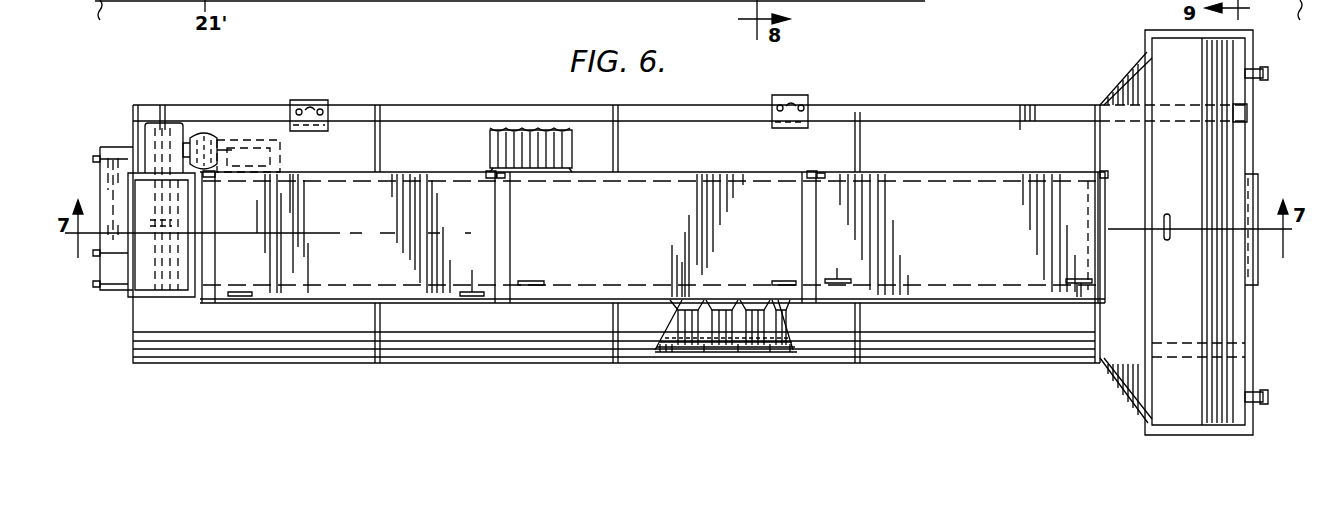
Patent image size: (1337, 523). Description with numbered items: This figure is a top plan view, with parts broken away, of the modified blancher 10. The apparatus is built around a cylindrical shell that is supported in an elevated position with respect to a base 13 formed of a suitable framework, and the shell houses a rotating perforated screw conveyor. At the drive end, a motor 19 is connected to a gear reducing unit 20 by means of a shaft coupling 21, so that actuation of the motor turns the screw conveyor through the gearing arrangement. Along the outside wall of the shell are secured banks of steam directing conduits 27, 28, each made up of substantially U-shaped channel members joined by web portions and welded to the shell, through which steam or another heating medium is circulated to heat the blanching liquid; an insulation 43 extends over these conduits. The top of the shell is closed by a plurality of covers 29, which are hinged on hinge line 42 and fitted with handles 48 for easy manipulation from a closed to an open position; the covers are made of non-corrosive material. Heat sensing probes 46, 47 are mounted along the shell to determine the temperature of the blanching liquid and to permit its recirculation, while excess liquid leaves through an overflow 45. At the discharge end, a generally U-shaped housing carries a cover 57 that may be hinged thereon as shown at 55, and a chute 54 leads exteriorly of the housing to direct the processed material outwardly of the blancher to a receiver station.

The blancher 10 is at (411, 124).
The base 13 is at (1068, 110).
The motor 19 is at (280, 157).
The gear reducing unit 20 is at (177, 137).
The shaft coupling 21 is at (209, 131).
The steam directing conduit 27 is at (522, 132).
The steam directing conduit 28 is at (768, 353).
The cover 29 is at (383, 234).
The hinge line 42 is at (216, 180).
The insulation 43 is at (686, 355).
The overflow 45 is at (1028, 105).
The heat sensing probe 46 is at (312, 104).
The heat sensing probe 47 is at (803, 97).
The handle 48 is at (240, 292).
The chute 54 is at (1261, 186).
The hinge 55 is at (1268, 82).
The cover 57 is at (1222, 318).